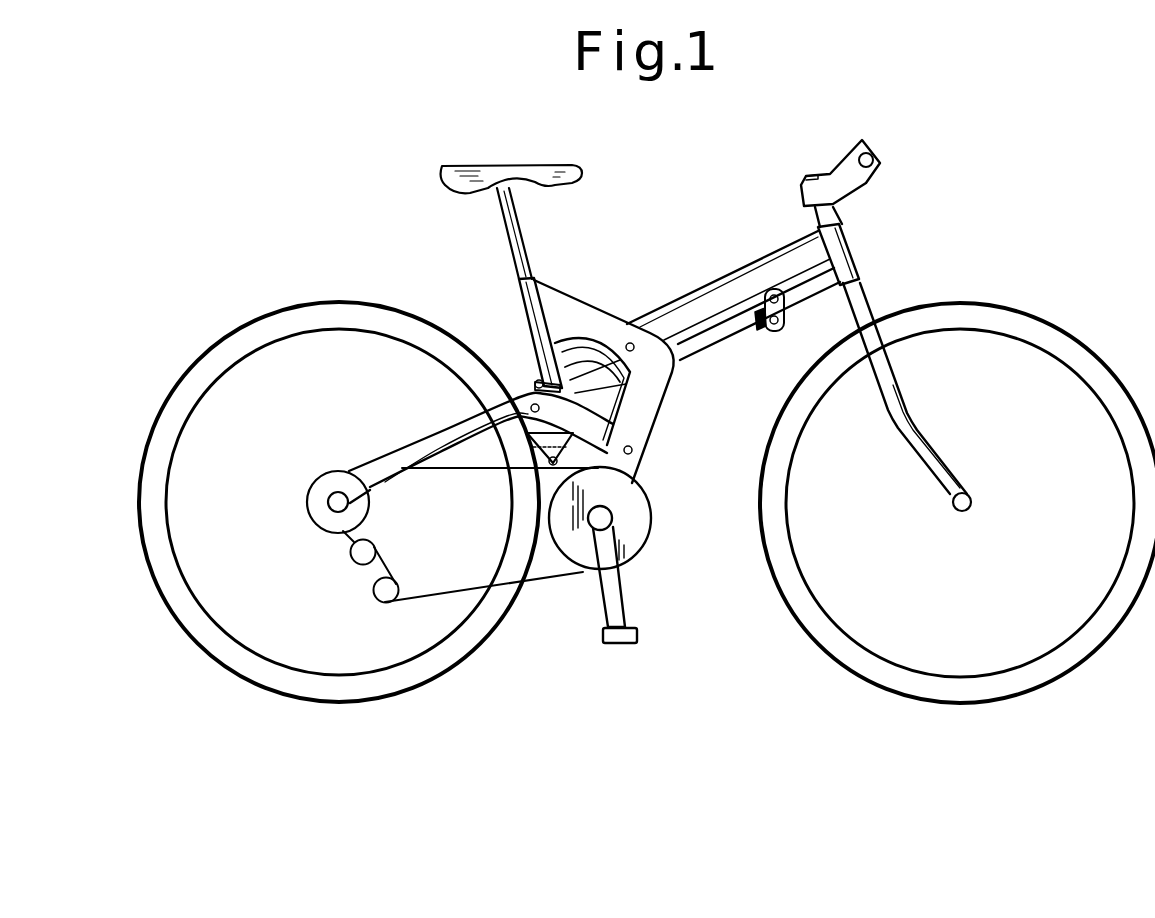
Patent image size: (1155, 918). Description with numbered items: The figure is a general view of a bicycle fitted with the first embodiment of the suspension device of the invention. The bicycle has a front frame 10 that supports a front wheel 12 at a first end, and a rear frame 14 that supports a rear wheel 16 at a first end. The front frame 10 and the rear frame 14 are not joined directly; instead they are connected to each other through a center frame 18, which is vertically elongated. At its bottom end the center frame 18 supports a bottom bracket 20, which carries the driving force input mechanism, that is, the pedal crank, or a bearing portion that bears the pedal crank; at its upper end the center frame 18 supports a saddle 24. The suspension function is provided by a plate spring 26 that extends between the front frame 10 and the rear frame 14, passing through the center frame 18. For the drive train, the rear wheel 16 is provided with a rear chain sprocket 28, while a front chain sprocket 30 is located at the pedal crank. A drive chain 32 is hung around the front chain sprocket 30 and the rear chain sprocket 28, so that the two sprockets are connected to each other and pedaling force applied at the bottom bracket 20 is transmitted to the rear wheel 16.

The front frame 10 is at (770, 262).
The front wheel 12 is at (1090, 358).
The rear frame 14 is at (425, 437).
The rear wheel 16 is at (193, 378).
The center frame 18 is at (599, 312).
The bottom bracket 20 is at (656, 546).
The saddle 24 is at (548, 172).
The plate spring 26 is at (712, 349).
The rear chain sprocket 28 is at (318, 531).
The front chain sprocket 30 is at (576, 573).
The drive chain 32 is at (440, 598).